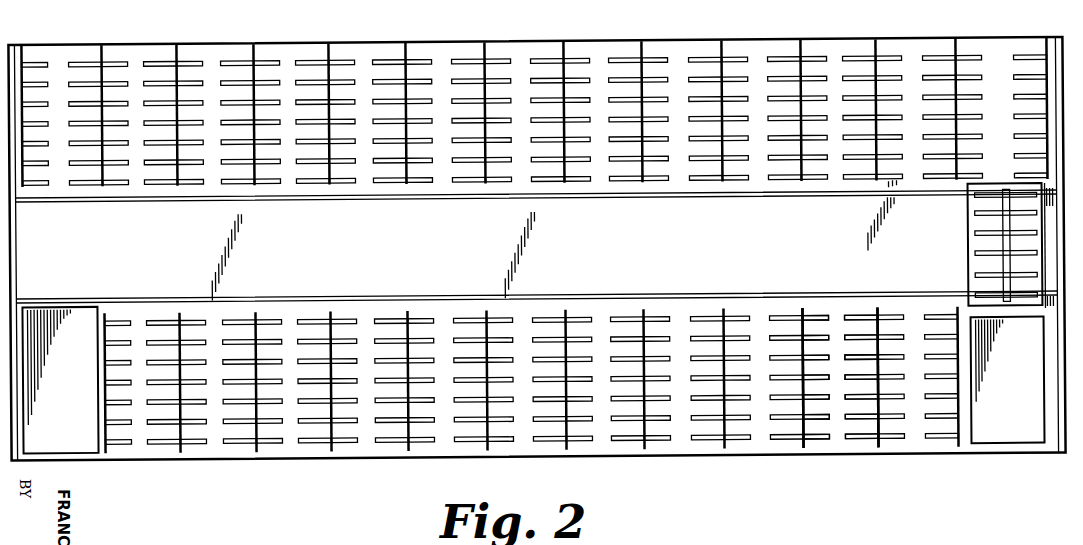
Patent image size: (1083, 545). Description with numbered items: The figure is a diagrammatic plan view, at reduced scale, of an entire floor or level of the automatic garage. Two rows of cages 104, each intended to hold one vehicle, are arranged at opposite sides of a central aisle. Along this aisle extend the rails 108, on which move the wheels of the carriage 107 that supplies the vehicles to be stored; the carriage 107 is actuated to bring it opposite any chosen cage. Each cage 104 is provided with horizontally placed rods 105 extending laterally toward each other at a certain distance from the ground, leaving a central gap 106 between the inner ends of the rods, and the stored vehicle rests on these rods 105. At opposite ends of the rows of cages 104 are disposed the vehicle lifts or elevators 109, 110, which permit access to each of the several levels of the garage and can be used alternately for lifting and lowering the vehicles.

The cage 104 is at (60, 50).
The rod 105 is at (823, 319).
The central gap 106 is at (837, 320).
The carriage 107 is at (978, 266).
The rail 108 is at (598, 200).
The vehicle lift or elevator 109 is at (1021, 438).
The vehicle lift or elevator 110 is at (70, 437).